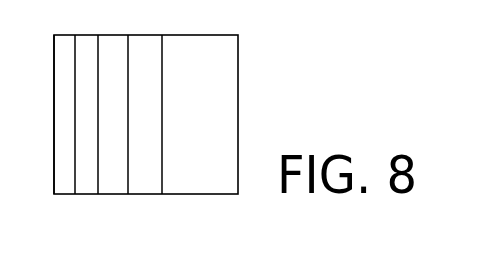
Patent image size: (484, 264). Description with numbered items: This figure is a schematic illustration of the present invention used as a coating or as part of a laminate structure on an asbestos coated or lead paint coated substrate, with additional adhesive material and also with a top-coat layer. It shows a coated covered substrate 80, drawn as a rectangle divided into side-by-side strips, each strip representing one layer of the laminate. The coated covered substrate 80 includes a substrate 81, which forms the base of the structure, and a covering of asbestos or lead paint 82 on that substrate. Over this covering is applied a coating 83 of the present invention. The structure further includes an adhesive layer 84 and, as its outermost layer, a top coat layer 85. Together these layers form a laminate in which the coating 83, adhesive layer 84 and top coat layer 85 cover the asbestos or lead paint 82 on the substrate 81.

The coated covered substrate 80 is at (278, 70).
The substrate 81 is at (220, 101).
The covering of asbestos or lead paint 82 is at (148, 150).
The coating 83 is at (83, 107).
The adhesive layer 84 is at (112, 153).
The top coat layer 85 is at (60, 62).